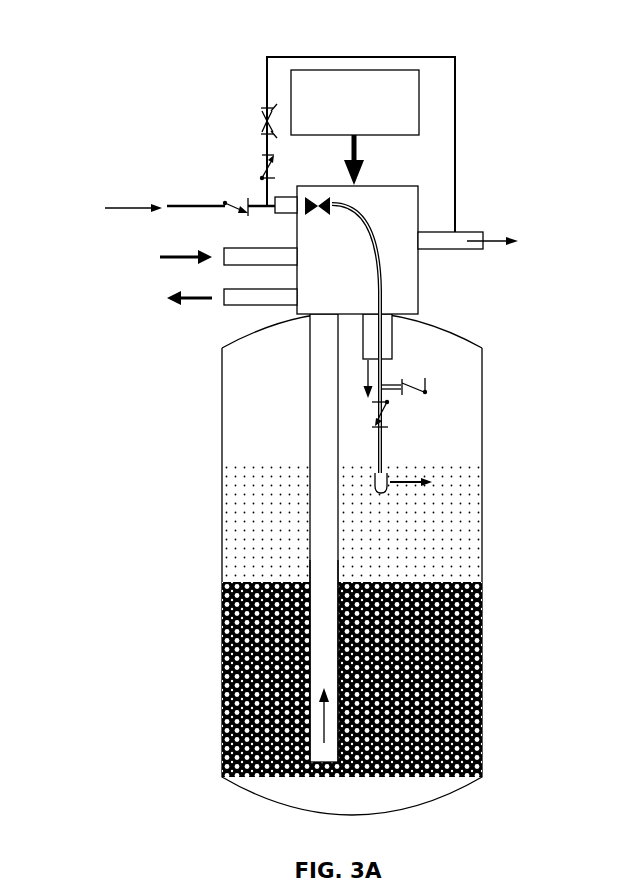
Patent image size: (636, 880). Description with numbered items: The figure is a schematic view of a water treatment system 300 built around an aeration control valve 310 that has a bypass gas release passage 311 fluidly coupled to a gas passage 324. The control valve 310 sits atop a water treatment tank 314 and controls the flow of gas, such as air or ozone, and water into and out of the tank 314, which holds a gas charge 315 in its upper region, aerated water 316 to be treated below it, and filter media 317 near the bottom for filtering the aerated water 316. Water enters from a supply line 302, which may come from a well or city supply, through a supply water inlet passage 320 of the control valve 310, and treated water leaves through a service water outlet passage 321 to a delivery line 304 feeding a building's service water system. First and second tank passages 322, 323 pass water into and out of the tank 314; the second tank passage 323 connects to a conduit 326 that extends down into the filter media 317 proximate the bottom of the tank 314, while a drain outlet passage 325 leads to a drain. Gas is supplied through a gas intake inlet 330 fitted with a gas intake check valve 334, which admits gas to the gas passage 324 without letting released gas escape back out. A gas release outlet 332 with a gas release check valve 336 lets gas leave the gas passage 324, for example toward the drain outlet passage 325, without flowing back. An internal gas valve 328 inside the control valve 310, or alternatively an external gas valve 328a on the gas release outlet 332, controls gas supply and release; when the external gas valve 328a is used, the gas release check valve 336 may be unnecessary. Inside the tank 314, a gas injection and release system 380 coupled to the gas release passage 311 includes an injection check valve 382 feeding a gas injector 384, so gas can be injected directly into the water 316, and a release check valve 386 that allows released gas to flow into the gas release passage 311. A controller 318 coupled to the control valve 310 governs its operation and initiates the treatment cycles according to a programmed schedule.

The water treatment system 300 is at (492, 112).
The supply line 302 is at (172, 262).
The delivery line 304 is at (187, 304).
The aeration control valve 310 is at (408, 186).
The bypass gas release passage 311 is at (362, 213).
The water treatment tank 314 is at (222, 398).
The gas charge 315 is at (273, 450).
The aerated water 316 is at (275, 518).
The filter media 317 is at (273, 682).
The controller 318 is at (316, 136).
The supply water inlet passage 320 is at (276, 260).
The service water outlet passage 321 is at (278, 304).
The first tank passage 322 is at (392, 342).
The second tank passage 323 is at (316, 325).
The gas passage 324 is at (286, 214).
The drain outlet passage 325 is at (440, 250).
The conduit 326 is at (342, 573).
The internal gas valve 328 is at (320, 216).
The external gas valve 328a is at (256, 117).
The gas intake inlet 330 is at (197, 206).
The gas release outlet 332 is at (304, 56).
The gas intake check valve 334 is at (230, 218).
The gas release check valve 336 is at (262, 165).
The gas injection and release system 380 is at (456, 408).
The injection check valve 382 is at (384, 417).
The gas injector 384 is at (387, 473).
The release check valve 386 is at (407, 382).